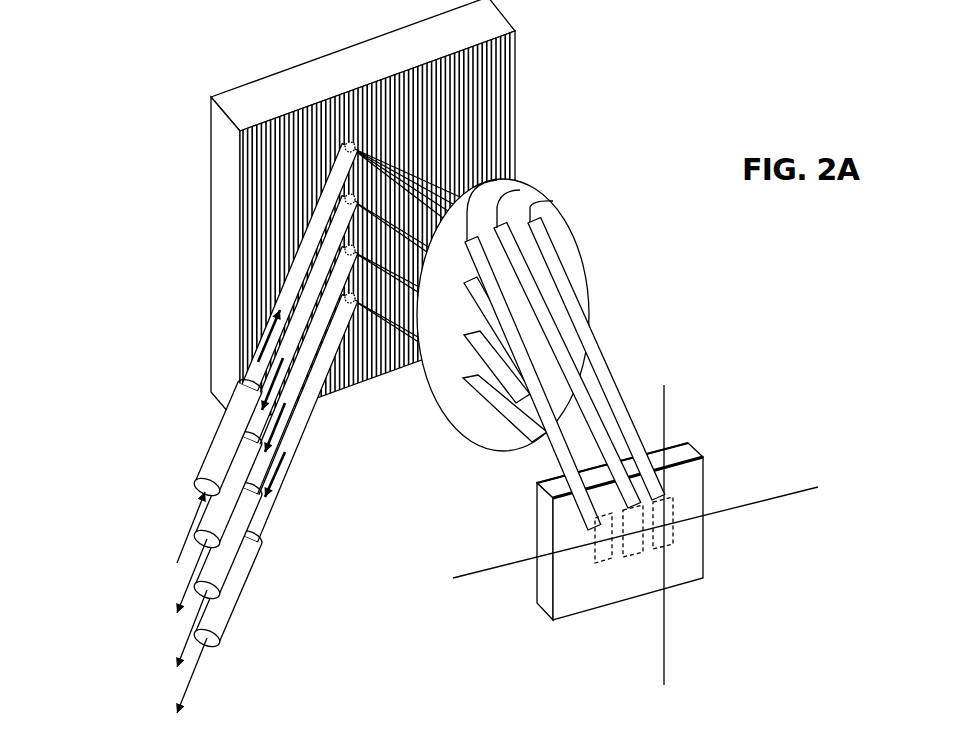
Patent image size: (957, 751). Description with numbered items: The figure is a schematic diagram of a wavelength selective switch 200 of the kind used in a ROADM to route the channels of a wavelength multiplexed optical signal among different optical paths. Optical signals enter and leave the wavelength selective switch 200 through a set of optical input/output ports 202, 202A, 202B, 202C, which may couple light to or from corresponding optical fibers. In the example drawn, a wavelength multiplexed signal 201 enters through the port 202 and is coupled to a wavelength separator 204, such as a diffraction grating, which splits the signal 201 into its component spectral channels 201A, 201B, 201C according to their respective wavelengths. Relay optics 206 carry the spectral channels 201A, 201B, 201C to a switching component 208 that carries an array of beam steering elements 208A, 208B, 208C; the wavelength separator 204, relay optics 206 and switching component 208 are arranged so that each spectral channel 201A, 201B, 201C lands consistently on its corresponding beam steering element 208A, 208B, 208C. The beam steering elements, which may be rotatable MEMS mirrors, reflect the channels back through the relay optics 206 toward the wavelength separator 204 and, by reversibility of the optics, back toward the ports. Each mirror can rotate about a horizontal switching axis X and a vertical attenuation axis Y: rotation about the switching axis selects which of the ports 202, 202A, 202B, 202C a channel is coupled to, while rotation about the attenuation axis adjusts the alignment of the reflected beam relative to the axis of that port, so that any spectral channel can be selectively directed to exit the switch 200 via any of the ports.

The wavelength selective switch 200 is at (98, 113).
The wavelength multiplexed signal 201 is at (253, 345).
The spectral channel 201A is at (520, 183).
The spectral channel 201B is at (520, 190).
The spectral channel 201C is at (553, 201).
The optical input/output port 202 is at (190, 445).
The optical input/output port 202A is at (210, 512).
The optical input/output port 202B is at (212, 568).
The optical input/output port 202C is at (220, 615).
The wavelength separator 204 is at (404, 215).
The relay optics 206 is at (462, 413).
The switching component 208 is at (580, 590).
The beam steering element 208A is at (597, 540).
The beam steering element 208B is at (636, 553).
The beam steering element 208C is at (677, 522).